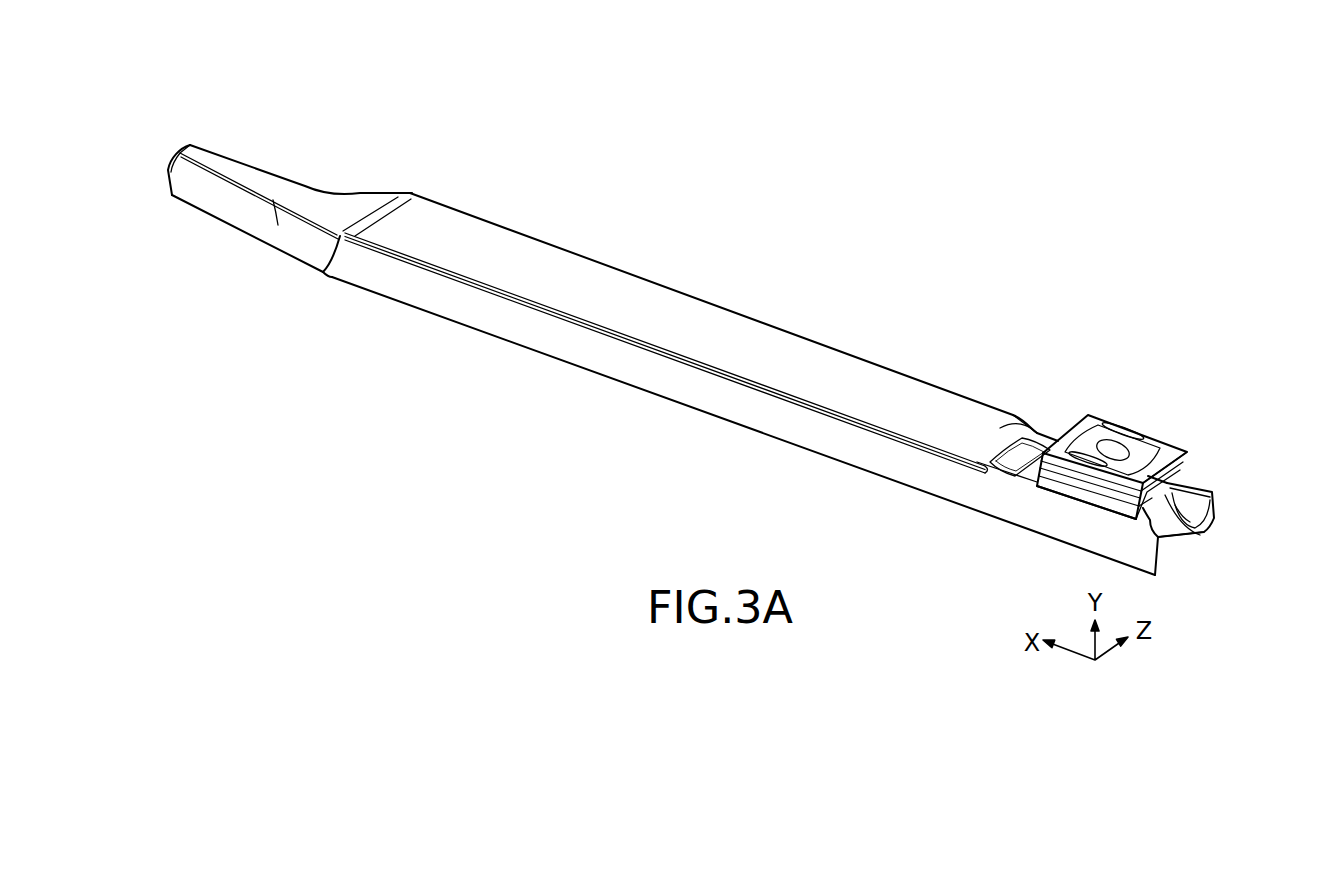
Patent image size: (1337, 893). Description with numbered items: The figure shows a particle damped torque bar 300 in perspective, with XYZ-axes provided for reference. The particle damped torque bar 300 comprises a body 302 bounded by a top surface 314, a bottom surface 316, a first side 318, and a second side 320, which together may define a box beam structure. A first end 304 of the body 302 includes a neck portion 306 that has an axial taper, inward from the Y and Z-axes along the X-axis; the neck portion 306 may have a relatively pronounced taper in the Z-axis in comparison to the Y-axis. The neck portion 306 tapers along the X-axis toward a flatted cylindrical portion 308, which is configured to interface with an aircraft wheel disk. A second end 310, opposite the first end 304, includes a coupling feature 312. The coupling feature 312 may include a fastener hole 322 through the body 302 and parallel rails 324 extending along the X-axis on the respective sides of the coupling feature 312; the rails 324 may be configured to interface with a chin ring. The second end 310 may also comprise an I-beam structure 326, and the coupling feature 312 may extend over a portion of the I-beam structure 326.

The particle damped torque bar 300 is at (721, 302).
The body 302 is at (803, 384).
The first end 304 is at (290, 153).
The neck portion 306 is at (352, 190).
The flatted cylindrical portion 308 is at (260, 167).
The second end 310 is at (1061, 392).
The coupling feature 312 is at (1111, 459).
The top surface 314 is at (565, 262).
The bottom surface 316 is at (560, 359).
The first side 318 is at (628, 391).
The second side 320 is at (646, 272).
The fastener hole 322 is at (1110, 448).
The parallel rails 324 is at (1077, 492).
The I-beam structure 326 is at (1206, 524).